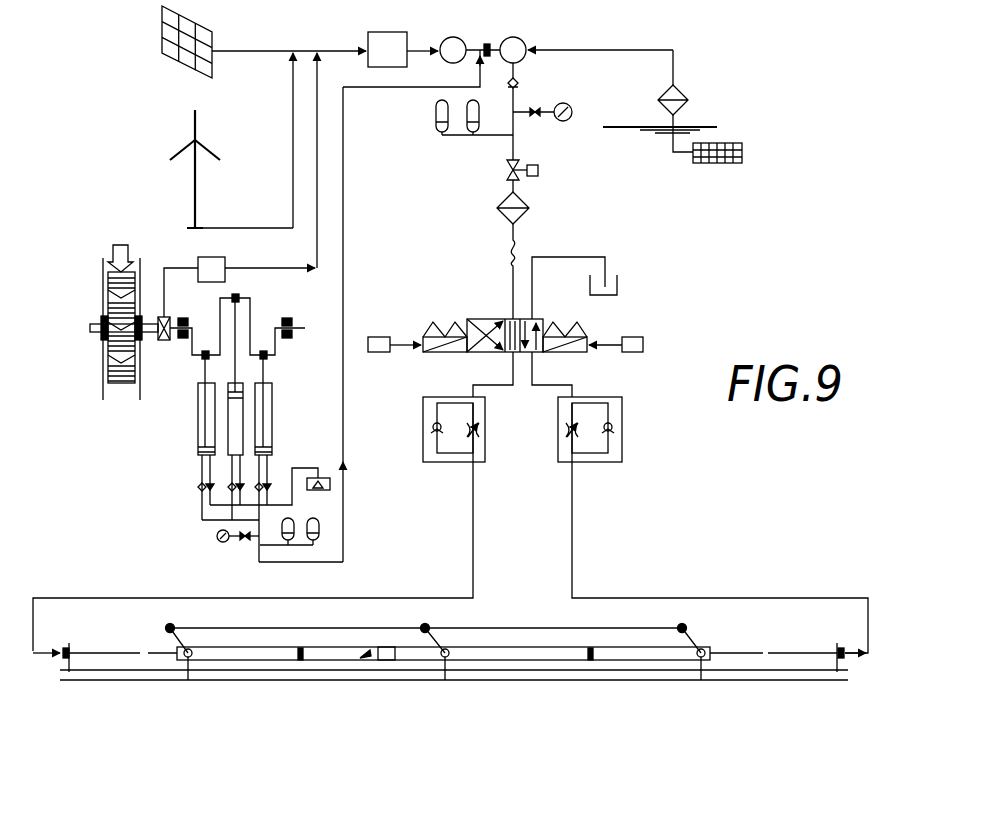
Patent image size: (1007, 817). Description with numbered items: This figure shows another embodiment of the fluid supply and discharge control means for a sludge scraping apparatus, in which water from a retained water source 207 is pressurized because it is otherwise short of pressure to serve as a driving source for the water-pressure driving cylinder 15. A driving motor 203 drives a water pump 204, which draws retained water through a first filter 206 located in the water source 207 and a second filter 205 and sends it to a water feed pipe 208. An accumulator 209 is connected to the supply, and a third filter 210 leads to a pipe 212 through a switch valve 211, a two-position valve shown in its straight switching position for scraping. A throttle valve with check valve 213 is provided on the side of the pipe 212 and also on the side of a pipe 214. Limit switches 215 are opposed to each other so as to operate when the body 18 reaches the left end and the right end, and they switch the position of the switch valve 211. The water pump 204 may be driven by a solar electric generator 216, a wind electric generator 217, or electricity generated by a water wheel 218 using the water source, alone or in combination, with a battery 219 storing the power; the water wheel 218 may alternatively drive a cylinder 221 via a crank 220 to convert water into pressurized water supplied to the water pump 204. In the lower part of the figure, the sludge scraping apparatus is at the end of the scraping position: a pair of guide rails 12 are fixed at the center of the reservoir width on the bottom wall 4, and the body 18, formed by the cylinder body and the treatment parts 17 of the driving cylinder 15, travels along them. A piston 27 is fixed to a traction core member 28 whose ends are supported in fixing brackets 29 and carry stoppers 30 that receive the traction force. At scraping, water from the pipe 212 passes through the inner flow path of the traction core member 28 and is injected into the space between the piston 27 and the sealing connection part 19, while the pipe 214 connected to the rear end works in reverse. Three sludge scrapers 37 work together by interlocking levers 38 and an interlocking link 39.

The bottom wall 4 is at (96, 680).
The guide rail 12 is at (124, 677).
The water-pressure driving cylinder 15 is at (488, 663).
The treatment part 17 is at (240, 660).
The body 18 is at (533, 666).
The first flange (sealing connection part) 19 is at (300, 660).
The piston 27 is at (392, 660).
The traction core member 28 is at (128, 648).
The fixing bracket 29 is at (69, 651).
The stopper 30 is at (63, 648).
The sludge scraper 37 is at (190, 668).
The interlocking lever 38 is at (176, 641).
The interlocking link 39 is at (310, 628).
The driving motor 203 is at (457, 37).
The water pump 204 is at (522, 37).
The second filter 205 is at (688, 98).
The first filter 206 is at (727, 165).
The water source 207 is at (717, 127).
The water feed pipe 208 is at (515, 127).
The accumulator 209 is at (437, 112).
The third filter 210 is at (526, 215).
The switch valve 211 is at (550, 306).
The pipe 212 is at (475, 476).
The throttle valve with check valve 213 is at (420, 466).
The pipe 214 is at (573, 540).
The limit switch 215 is at (378, 337).
The solar electric generator 216 is at (201, 31).
The wind electric generator 217 is at (200, 141).
The water wheel 218 is at (118, 383).
The battery 219 is at (398, 24).
The crank 220 is at (273, 356).
The cylinder 221 is at (272, 421).